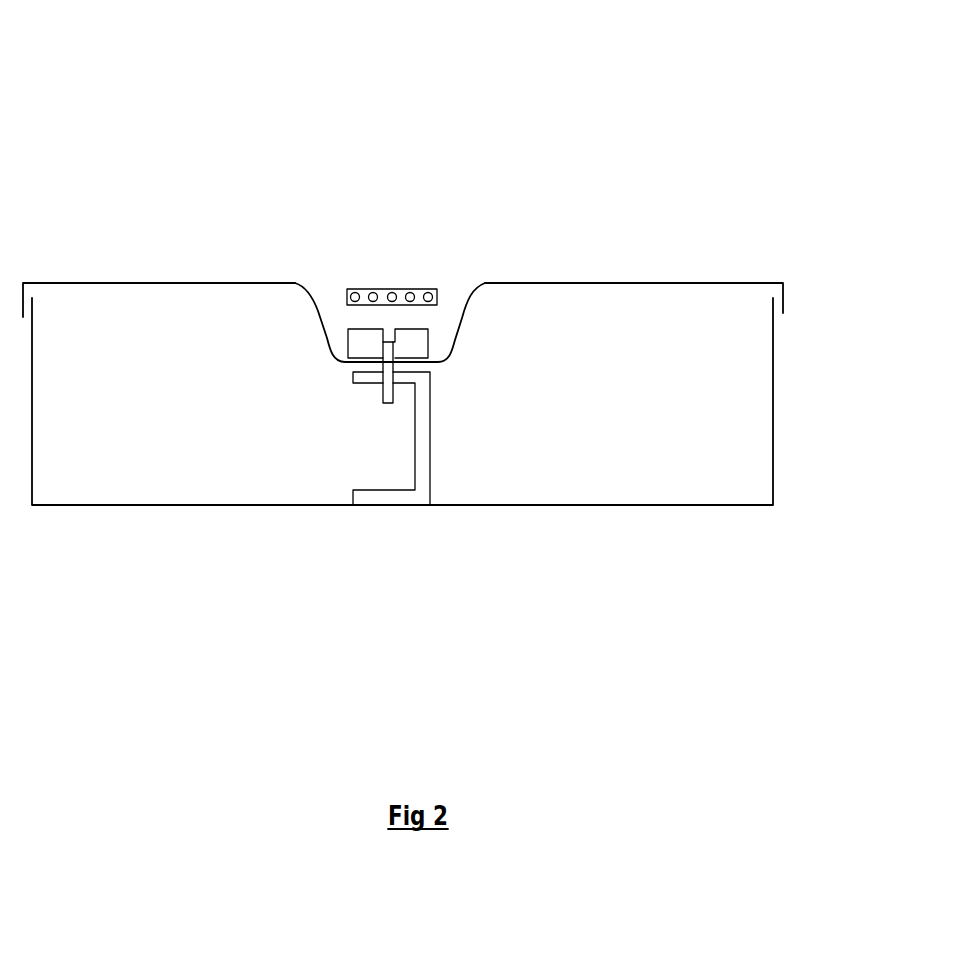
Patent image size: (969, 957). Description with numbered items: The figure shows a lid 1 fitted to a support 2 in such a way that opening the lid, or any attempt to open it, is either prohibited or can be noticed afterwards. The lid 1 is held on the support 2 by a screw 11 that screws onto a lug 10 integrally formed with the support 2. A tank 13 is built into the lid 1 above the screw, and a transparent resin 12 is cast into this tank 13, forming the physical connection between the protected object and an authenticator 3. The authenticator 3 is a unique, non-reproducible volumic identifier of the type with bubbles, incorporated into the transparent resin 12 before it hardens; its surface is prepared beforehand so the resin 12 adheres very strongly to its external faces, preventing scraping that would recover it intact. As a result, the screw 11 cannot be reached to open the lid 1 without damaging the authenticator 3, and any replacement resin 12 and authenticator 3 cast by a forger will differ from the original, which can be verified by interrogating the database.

The lid 1 is at (638, 283).
The support 2 is at (742, 417).
The authenticator 3 is at (431, 296).
The lug 10 is at (430, 462).
The screw 11 is at (382, 388).
The transparent resin 12 is at (338, 300).
The tank 13 is at (320, 325).